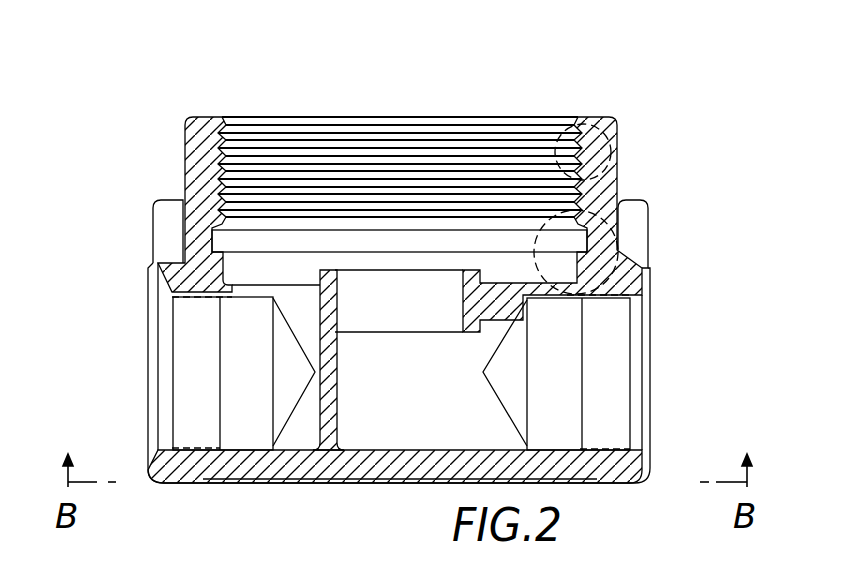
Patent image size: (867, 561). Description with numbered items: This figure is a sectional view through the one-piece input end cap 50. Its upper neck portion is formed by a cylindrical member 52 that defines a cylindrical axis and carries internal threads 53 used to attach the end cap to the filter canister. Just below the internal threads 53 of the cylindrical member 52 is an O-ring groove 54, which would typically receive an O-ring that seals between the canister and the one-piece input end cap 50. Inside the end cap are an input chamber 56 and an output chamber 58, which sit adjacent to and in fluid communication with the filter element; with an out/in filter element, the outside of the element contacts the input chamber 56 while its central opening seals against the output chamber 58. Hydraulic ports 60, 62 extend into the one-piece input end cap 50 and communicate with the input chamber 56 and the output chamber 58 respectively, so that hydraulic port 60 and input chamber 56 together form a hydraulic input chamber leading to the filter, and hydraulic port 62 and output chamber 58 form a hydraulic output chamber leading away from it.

The one-piece input end cap 50 is at (429, 108).
The cylindrical member 52 is at (618, 199).
The internal threads 53 is at (505, 128).
The O-ring groove 54 is at (618, 255).
The input chamber 56 is at (258, 438).
The output chamber 58 is at (411, 440).
The hydraulic port 60 is at (182, 350).
The hydraulic port 62 is at (608, 354).